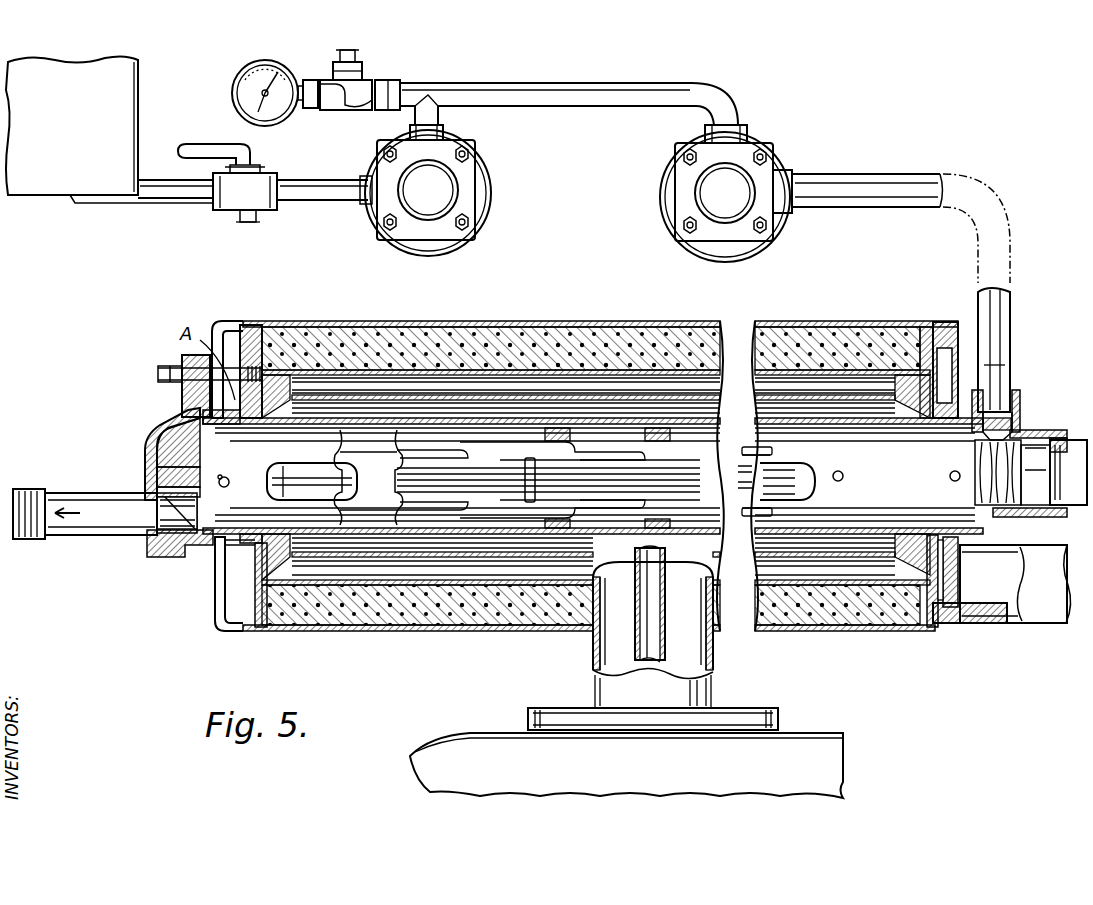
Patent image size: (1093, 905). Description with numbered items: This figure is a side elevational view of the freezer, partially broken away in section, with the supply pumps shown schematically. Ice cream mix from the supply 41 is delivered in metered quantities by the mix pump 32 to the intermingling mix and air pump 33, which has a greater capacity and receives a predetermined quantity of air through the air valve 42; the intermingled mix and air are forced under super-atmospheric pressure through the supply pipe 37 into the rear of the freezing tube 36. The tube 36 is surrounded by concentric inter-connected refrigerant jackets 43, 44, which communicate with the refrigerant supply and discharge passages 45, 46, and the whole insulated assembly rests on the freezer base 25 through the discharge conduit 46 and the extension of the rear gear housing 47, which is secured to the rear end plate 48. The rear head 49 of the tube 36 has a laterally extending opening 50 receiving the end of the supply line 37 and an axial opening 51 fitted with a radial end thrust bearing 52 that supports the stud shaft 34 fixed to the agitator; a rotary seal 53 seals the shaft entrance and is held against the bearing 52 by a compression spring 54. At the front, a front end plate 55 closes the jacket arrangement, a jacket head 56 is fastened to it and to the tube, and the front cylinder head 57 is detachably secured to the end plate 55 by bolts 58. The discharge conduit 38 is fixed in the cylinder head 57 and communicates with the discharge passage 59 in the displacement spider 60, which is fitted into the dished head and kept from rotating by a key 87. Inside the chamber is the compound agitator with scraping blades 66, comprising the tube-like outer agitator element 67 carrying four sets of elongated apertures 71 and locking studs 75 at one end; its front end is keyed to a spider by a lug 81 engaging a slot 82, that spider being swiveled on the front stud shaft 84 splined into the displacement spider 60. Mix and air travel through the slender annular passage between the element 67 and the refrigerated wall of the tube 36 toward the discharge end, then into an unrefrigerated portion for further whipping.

The mix supply 41 is at (47, 182).
The air valve 42 is at (358, 88).
The mix pump 32 is at (468, 210).
The mix and air pump 33 is at (668, 198).
The supply pipe 37 is at (822, 192).
The rear gear housing 47 is at (968, 332).
The bolts 58 is at (168, 370).
The key 87 is at (185, 400).
The front cylinder head 57 is at (160, 425).
The displacement spider 60 is at (165, 452).
The front stud shaft 84 is at (160, 476).
The slot 82 is at (222, 478).
The lug 81 is at (229, 484).
The elongated apertures 71 is at (380, 463).
The outer agitator element 67 is at (680, 498).
The scraping blades 66 is at (850, 440).
The locking studs 75 is at (950, 476).
The compression spring 54 is at (985, 448).
The laterally extending opening 50 is at (1020, 402).
The rear head 49 is at (1030, 432).
The radial end thrust bearing 52 is at (1063, 432).
The axial opening 51 is at (1070, 498).
The rotary seal 53 is at (1005, 517).
The stud shaft 34 is at (1040, 500).
The rear end plate 48 is at (930, 612).
The discharge conduit 38 is at (82, 527).
The discharge passage 59 is at (178, 512).
The jacket head 56 is at (243, 585).
The front end plate 55 is at (222, 620).
The freezing tube 36 is at (405, 536).
The refrigerant jacket 43 is at (470, 552).
The refrigerant jacket 44 is at (520, 585).
The refrigerant supply passage 45 is at (635, 637).
The refrigerant discharge conduit 46 is at (713, 655).
The freezer base 25 is at (820, 733).